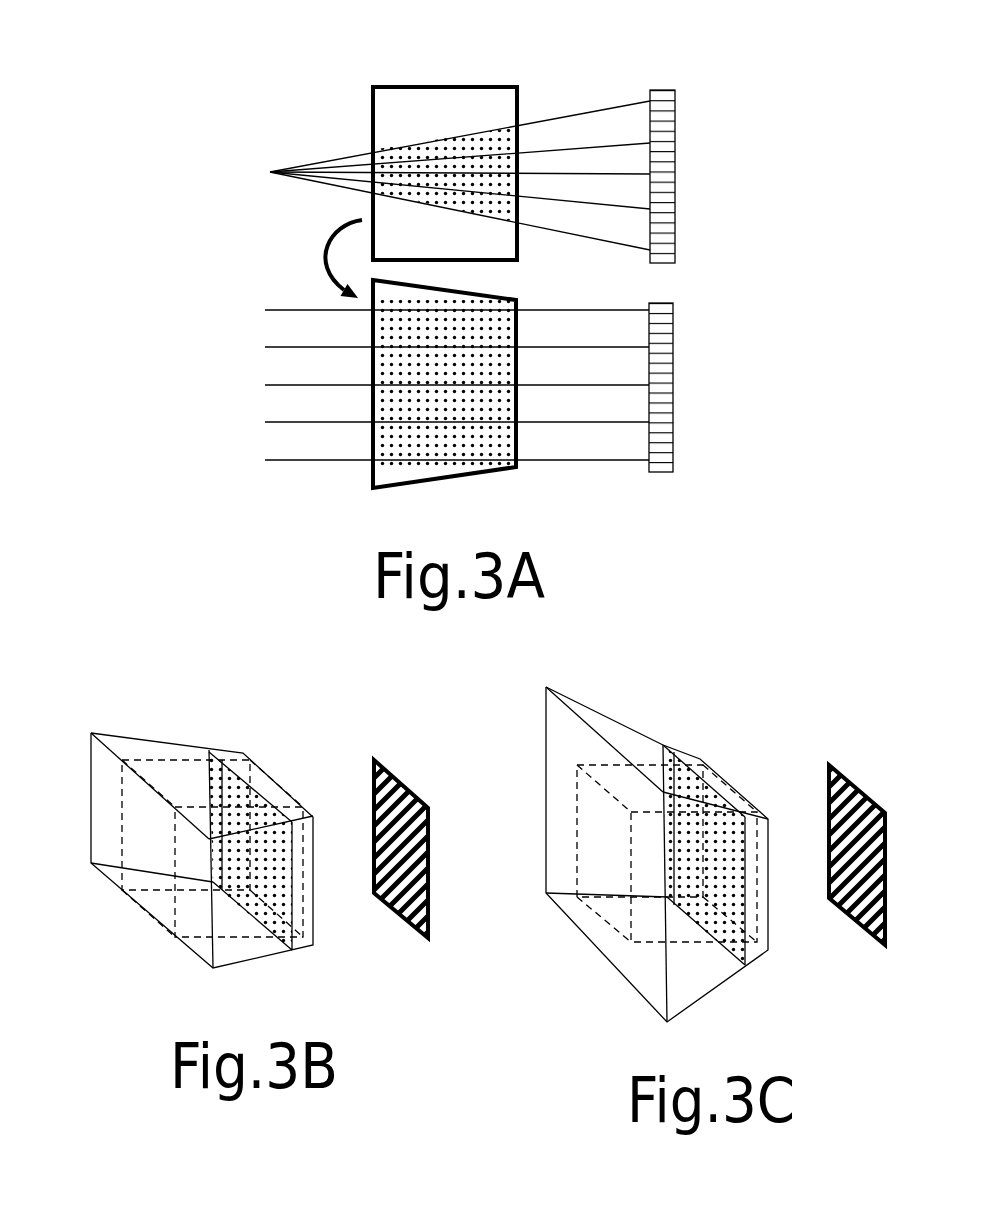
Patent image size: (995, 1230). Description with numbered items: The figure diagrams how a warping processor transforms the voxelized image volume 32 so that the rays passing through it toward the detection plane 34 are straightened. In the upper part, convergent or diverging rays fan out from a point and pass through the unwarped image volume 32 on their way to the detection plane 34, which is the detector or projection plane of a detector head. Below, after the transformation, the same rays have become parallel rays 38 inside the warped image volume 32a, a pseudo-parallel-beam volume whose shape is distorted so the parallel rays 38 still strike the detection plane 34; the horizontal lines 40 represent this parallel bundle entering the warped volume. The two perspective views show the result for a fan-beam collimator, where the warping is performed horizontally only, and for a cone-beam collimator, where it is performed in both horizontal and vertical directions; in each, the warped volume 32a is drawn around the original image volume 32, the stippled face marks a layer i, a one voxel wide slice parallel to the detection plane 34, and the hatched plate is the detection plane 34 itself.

In FIG. 3A, the voxelized image volume 32 is at (407, 87).
In FIG. 3B, the voxelized image volume 32 is at (121, 787).
In FIG. 3C, the voxelized image volume 32 is at (576, 792).
In FIG. 3A, the warped image volume 32a is at (372, 479).
In FIG. 3B, the warped image volume 32a is at (195, 955).
In FIG. 3C, the warped image volume 32a is at (622, 976).
In FIG. 3A, the detection plane 34 is at (661, 90).
In FIG. 3B, the detection plane 34 is at (372, 785).
In FIG. 3C, the detection plane 34 is at (828, 790).
In FIG. 3A, the parallel rays 38 is at (333, 160).
In FIG. 3A, the collimated light beam 40 is at (283, 309).
In FIG. 3B, the layer i is at (265, 892).
In FIG. 3C, the layer i is at (719, 898).